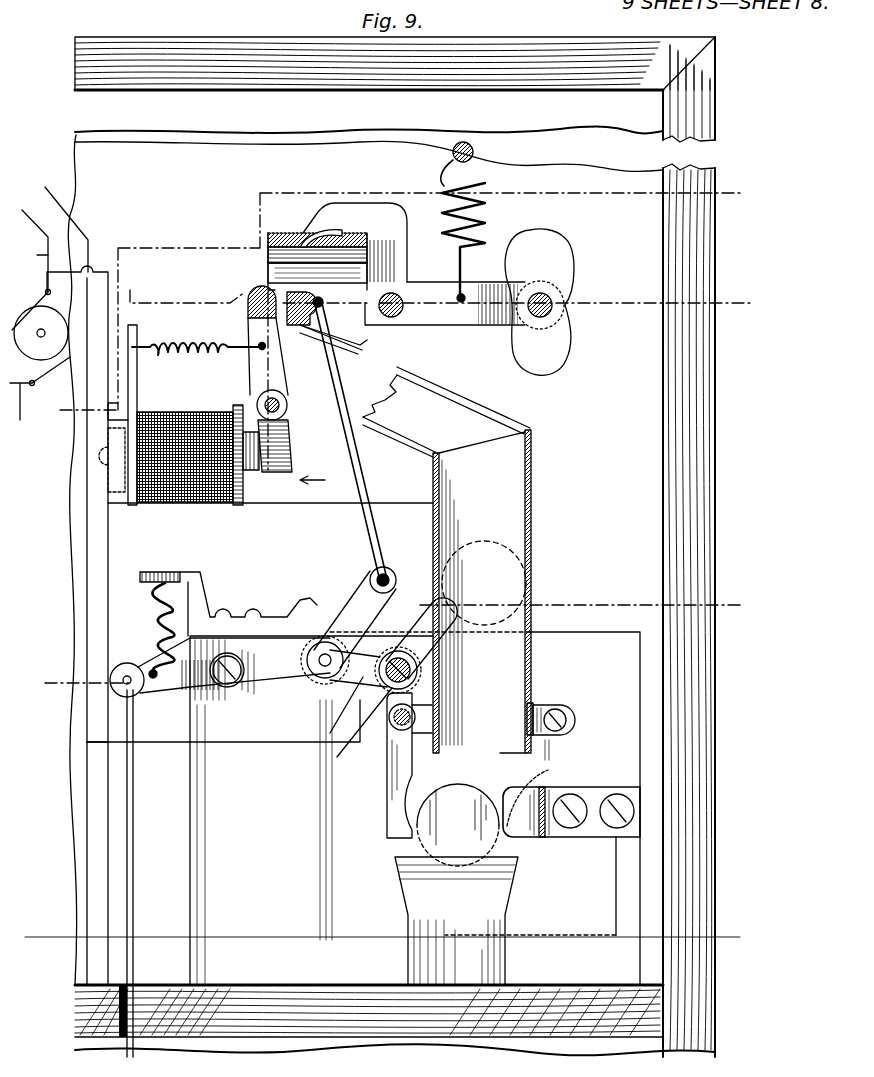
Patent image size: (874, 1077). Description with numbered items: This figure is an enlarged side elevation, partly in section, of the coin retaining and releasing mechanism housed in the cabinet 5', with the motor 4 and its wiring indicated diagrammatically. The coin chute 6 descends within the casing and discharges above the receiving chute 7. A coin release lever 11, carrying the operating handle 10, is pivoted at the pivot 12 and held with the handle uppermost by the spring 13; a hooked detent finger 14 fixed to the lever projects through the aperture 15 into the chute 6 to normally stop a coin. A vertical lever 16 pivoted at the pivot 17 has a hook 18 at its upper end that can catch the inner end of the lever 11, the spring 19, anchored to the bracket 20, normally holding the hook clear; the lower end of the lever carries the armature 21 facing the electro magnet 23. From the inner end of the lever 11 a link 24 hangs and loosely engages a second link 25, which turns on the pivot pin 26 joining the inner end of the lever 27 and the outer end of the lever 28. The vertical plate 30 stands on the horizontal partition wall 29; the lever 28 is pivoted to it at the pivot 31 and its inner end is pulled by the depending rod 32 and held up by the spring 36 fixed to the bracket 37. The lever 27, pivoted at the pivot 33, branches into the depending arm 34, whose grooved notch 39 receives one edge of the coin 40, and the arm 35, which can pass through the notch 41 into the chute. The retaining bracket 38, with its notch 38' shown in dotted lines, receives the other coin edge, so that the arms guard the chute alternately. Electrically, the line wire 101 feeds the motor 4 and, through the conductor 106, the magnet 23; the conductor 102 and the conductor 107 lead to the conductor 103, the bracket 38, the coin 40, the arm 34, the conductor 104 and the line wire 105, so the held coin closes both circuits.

The motor 4 is at (30, 310).
The cabinet 5' is at (706, 547).
The coin slot or chute 6 is at (516, 492).
The receiving chute 7 is at (505, 886).
The operating handle 10 is at (552, 300).
The coin release lever 11 is at (475, 333).
The pivot 12 is at (398, 314).
The spring 13 is at (480, 222).
The detent finger 14 is at (368, 205).
The aperture 15 is at (293, 238).
The lever 16 is at (292, 358).
The pivot 17 is at (258, 402).
The hook 18 is at (252, 288).
The spring 19 is at (190, 340).
The bracket 20 is at (137, 380).
The armature 21 is at (272, 472).
The electro magnet 23 is at (182, 502).
The link 24 is at (356, 468).
The second link 25 is at (378, 612).
The pivot pin 26 is at (325, 668).
The lever 27 is at (356, 728).
The lever 28 is at (200, 684).
The horizontal partition wall 29 is at (272, 985).
The vertical plate 30 is at (596, 632).
The pivot 31 is at (238, 690).
The rod or link 32 is at (135, 835).
The pivot 33 is at (421, 676).
The depending arm 34 is at (398, 770).
The arm 35 is at (430, 607).
The spring 36 is at (148, 590).
The bracket 37 is at (190, 577).
The retaining bracket 38 is at (542, 861).
The notch 38' is at (543, 792).
The grooved notch 39 is at (400, 795).
The coin 40 is at (460, 800).
The notch 41 is at (450, 590).
The line wire 101 is at (25, 268).
The conductor 102 is at (30, 417).
The conductor 103 is at (252, 937).
The conductor 104 is at (87, 606).
The line wire 105 is at (78, 230).
The conductor 106 is at (107, 430).
The conductor 107 is at (90, 722).